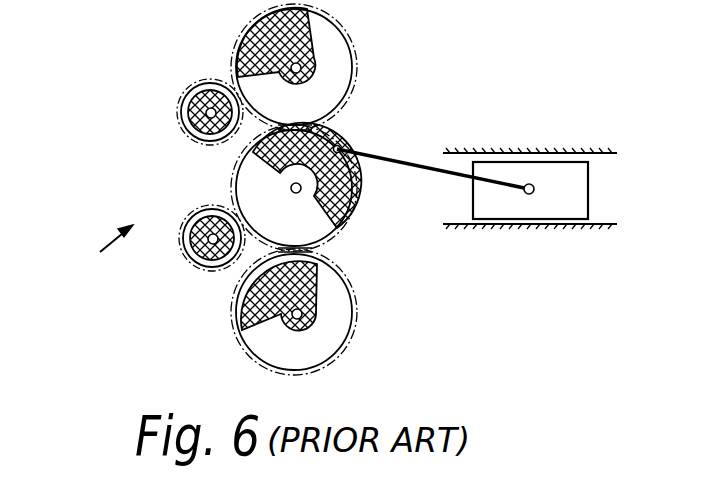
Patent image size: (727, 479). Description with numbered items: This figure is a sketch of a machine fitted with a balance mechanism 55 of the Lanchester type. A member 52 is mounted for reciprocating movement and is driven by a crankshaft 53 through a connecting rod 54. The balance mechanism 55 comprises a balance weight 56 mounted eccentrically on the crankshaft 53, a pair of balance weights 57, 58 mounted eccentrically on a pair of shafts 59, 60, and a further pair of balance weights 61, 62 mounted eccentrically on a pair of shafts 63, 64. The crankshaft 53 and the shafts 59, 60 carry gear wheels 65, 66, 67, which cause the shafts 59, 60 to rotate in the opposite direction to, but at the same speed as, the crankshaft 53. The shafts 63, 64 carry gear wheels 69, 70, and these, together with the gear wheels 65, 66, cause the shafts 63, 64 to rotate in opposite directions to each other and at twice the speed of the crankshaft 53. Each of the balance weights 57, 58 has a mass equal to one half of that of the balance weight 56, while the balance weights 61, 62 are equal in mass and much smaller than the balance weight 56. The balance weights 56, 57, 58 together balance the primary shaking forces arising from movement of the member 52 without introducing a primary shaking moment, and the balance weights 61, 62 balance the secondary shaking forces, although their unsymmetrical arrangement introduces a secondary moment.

The member 52 is at (548, 207).
The crankshaft 53 is at (340, 146).
The connecting rod 54 is at (414, 160).
The balance mechanism 55 is at (101, 250).
The balance weight 56 is at (262, 180).
The balance weight 57 is at (262, 36).
The balance weight 58 is at (300, 273).
The shaft 59 is at (316, 60).
The shaft 60 is at (308, 326).
The balance weight 61 is at (203, 92).
The balance weight 62 is at (196, 262).
The shaft 63 is at (218, 105).
The shaft 64 is at (216, 266).
The gear wheel 65 is at (357, 198).
The gear wheel 66 is at (357, 78).
The gear wheel 67 is at (362, 313).
The gear wheel 69 is at (203, 140).
The gear wheel 70 is at (186, 234).